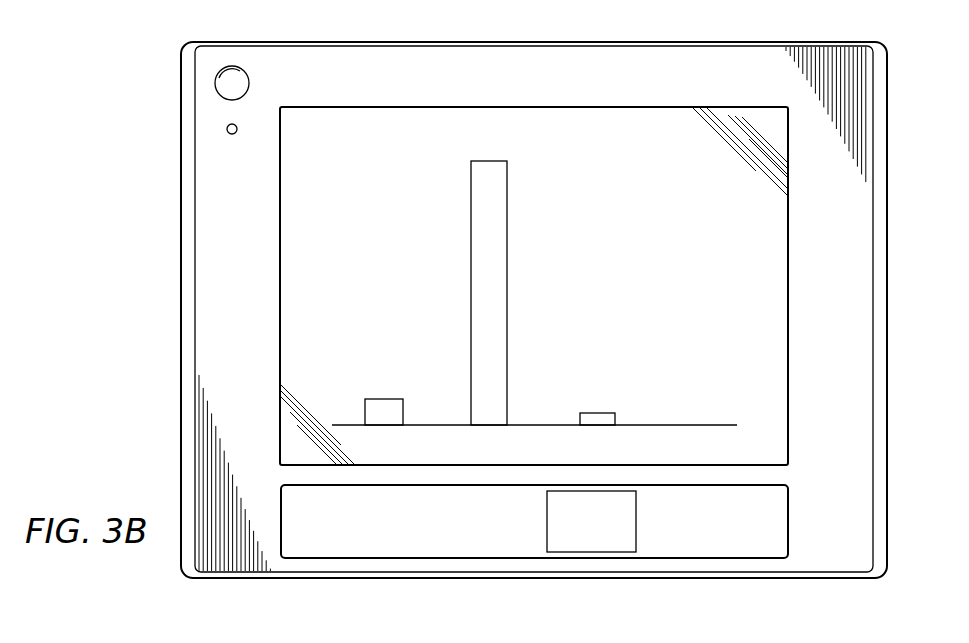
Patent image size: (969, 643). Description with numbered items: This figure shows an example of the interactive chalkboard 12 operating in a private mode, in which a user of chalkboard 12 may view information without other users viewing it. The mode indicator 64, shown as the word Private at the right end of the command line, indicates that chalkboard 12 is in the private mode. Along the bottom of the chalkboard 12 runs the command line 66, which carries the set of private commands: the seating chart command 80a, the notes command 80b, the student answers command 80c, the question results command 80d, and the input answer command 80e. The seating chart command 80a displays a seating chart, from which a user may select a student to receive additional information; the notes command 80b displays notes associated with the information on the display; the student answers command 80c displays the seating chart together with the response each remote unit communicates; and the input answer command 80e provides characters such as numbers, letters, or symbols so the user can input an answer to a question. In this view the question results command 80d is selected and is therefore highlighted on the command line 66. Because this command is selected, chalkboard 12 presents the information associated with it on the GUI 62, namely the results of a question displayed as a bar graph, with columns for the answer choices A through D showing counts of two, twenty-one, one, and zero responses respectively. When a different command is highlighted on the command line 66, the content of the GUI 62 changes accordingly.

The interactive chalkboard 12 is at (131, 194).
The GUI 62 is at (772, 388).
The command line 66 is at (798, 513).
The seating chart command 80a is at (330, 545).
The notes command 80b is at (413, 535).
The student answers command 80c is at (495, 545).
The question results command 80d is at (589, 548).
The input answer command 80e is at (670, 545).
The mode indicator 64 is at (746, 535).